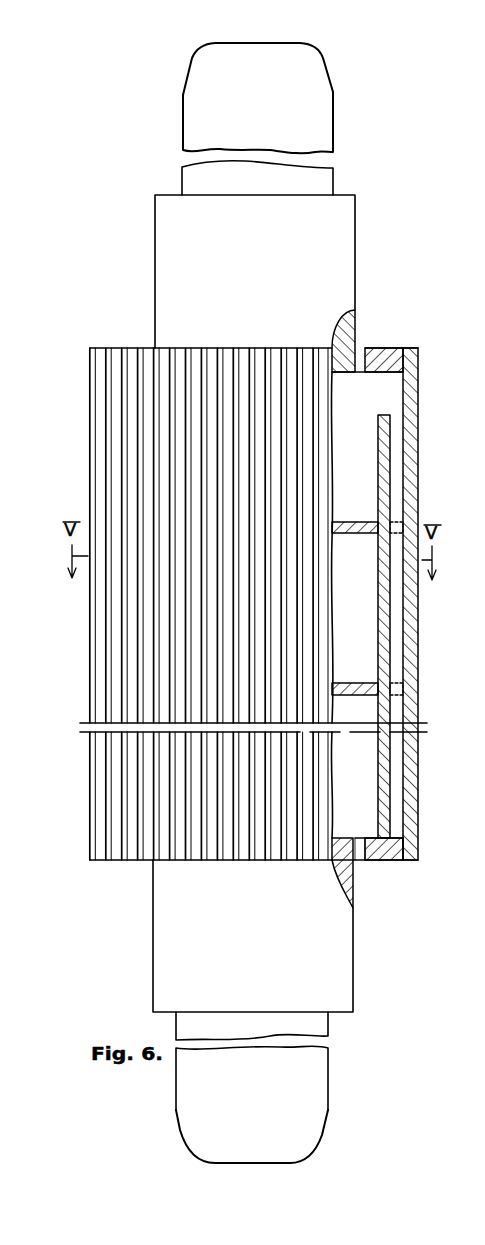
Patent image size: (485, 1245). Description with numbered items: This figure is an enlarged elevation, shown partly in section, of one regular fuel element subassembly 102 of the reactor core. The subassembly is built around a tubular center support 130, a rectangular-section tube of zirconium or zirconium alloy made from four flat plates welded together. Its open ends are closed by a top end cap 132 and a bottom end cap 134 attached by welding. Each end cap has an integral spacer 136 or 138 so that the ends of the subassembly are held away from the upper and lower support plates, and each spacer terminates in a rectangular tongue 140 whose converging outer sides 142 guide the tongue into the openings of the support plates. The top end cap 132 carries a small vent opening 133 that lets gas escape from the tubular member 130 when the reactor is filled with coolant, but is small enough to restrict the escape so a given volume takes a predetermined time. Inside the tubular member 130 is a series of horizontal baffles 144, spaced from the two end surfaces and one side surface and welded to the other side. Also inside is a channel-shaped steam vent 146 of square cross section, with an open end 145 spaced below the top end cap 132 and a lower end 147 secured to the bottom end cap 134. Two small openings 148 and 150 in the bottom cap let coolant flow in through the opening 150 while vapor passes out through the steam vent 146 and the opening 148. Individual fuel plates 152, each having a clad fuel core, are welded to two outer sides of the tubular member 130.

The fuel element subassembly 102 is at (419, 457).
The tubular center support 130 is at (411, 603).
The end cap 132 is at (375, 349).
The vent opening 133 is at (363, 349).
The end cap 134 is at (353, 872).
The spacer 136 is at (355, 268).
The spacer 138 is at (353, 953).
The tongue 140 is at (333, 120).
The converging outer sides 142 is at (190, 62).
The horizontal baffles 144 is at (340, 522).
The open end 145 is at (396, 417).
The steam vent 146 is at (378, 633).
The lower end 147 is at (405, 843).
The opening 148 is at (408, 861).
The opening 150 is at (365, 861).
The fuel plates 152 is at (313, 348).